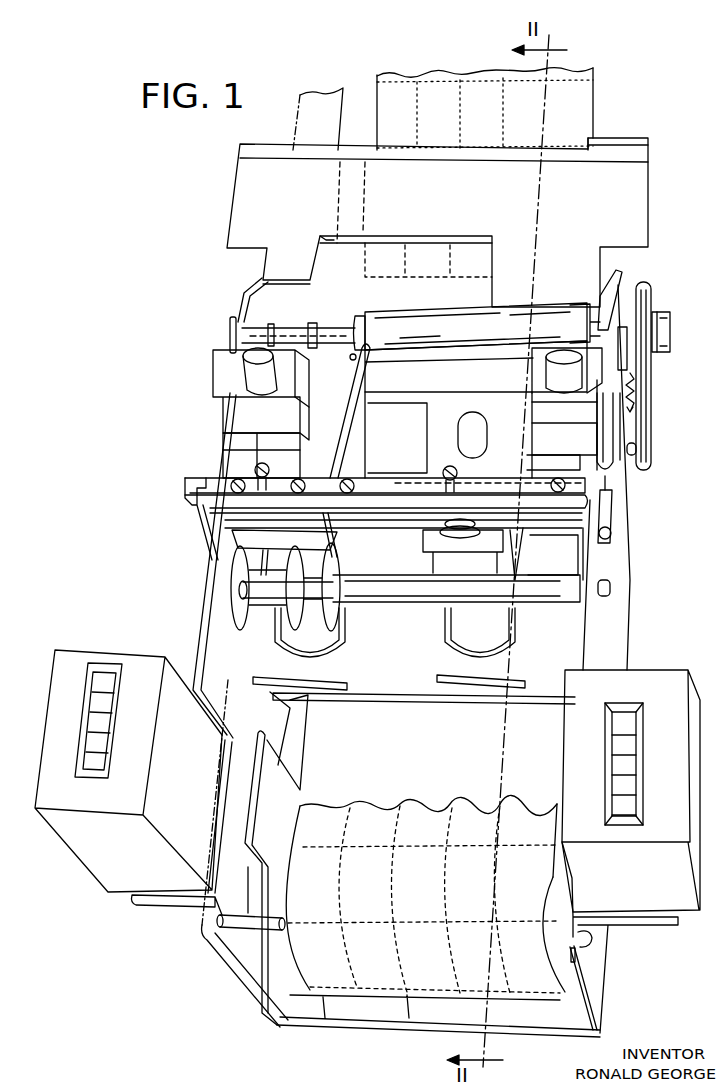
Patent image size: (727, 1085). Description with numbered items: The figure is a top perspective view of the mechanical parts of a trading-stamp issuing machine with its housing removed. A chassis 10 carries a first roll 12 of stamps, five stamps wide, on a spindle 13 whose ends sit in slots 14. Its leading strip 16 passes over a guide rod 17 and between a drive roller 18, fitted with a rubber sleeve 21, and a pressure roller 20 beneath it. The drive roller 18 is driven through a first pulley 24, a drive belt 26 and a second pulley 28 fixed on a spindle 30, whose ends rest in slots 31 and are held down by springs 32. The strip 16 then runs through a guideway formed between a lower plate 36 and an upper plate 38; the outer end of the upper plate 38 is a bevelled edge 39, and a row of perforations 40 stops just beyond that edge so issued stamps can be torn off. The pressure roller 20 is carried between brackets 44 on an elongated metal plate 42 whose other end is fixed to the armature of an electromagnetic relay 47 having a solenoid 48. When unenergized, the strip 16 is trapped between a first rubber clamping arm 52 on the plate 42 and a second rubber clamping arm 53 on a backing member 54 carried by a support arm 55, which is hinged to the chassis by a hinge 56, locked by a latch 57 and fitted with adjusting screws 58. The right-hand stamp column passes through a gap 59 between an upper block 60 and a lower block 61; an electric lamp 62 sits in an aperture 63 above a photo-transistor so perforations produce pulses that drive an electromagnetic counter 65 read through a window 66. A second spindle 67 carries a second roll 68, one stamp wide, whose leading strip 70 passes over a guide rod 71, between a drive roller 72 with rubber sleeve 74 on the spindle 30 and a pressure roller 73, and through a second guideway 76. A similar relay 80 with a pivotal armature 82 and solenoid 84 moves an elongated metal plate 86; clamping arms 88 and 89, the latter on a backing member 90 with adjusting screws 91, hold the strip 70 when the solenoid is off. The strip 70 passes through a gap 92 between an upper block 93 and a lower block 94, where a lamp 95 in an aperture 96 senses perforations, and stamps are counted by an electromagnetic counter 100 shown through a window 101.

The chassis 10 is at (617, 557).
The first roll 12 is at (572, 985).
The spindle 13 is at (588, 946).
The slots 14 is at (583, 952).
The leading strip 16 is at (490, 248).
The guide rod 17 is at (548, 600).
The drive roller 18 is at (472, 304).
The pressure roller 20 is at (480, 385).
The rubber sleeve 21 is at (436, 325).
The first pulley 24 is at (640, 448).
The drive belt 26 is at (640, 420).
The second pulley 28 is at (655, 305).
The spindle 30 is at (235, 331).
The slots 31 is at (242, 310).
The springs 32 is at (640, 398).
The lower plate 36 is at (648, 143).
The upper plate 38 is at (638, 172).
The bevelled edge 39 is at (616, 150).
The row of perforations 40 is at (565, 148).
The elongated metal plate 42 is at (420, 435).
The brackets 44 is at (355, 400).
The electromagnetic relay 47 is at (521, 560).
The solenoid 48 is at (505, 645).
The first rubber clamping arm 52 is at (404, 544).
The second rubber clamping arm 53 is at (404, 520).
The backing member 54 is at (553, 512).
The support arm 55 is at (528, 495).
The hinge 56 is at (610, 520).
The latch 57 is at (192, 500).
The adjusting screws 58 is at (405, 490).
The gap 59 is at (545, 445).
The upper block 60 is at (537, 415).
The lower block 61 is at (548, 452).
The electric lamp 62 is at (586, 383).
The aperture 63 is at (590, 390).
The electromagnetic counter 65 is at (668, 700).
The window 66 is at (628, 715).
The second spindle 67 is at (290, 950).
The second roll 68 is at (215, 968).
The leading strip 70 is at (207, 645).
The guide rod 71 is at (253, 595).
The drive roller 72 is at (284, 337).
The pressure roller 73 is at (322, 367).
The rubber sleeve 74 is at (303, 330).
The second guideway 76 is at (334, 240).
The electromagnetic relay 80 is at (258, 563).
The pivotal armature 82 is at (295, 528).
The solenoid 84 is at (318, 645).
The elongated metal plate 86 is at (275, 450).
The rubber clamping arm 88 is at (325, 560).
The rubber clamping arm 89 is at (330, 532).
The backing member 90 is at (240, 518).
The adjusting screws 91 is at (235, 483).
The gap 92 is at (255, 440).
The upper block 93 is at (245, 408).
The lower block 94 is at (270, 445).
The electric lamp 95 is at (258, 353).
The aperture 96 is at (248, 375).
The electromagnetic counter 100 is at (75, 837).
The window 101 is at (102, 672).